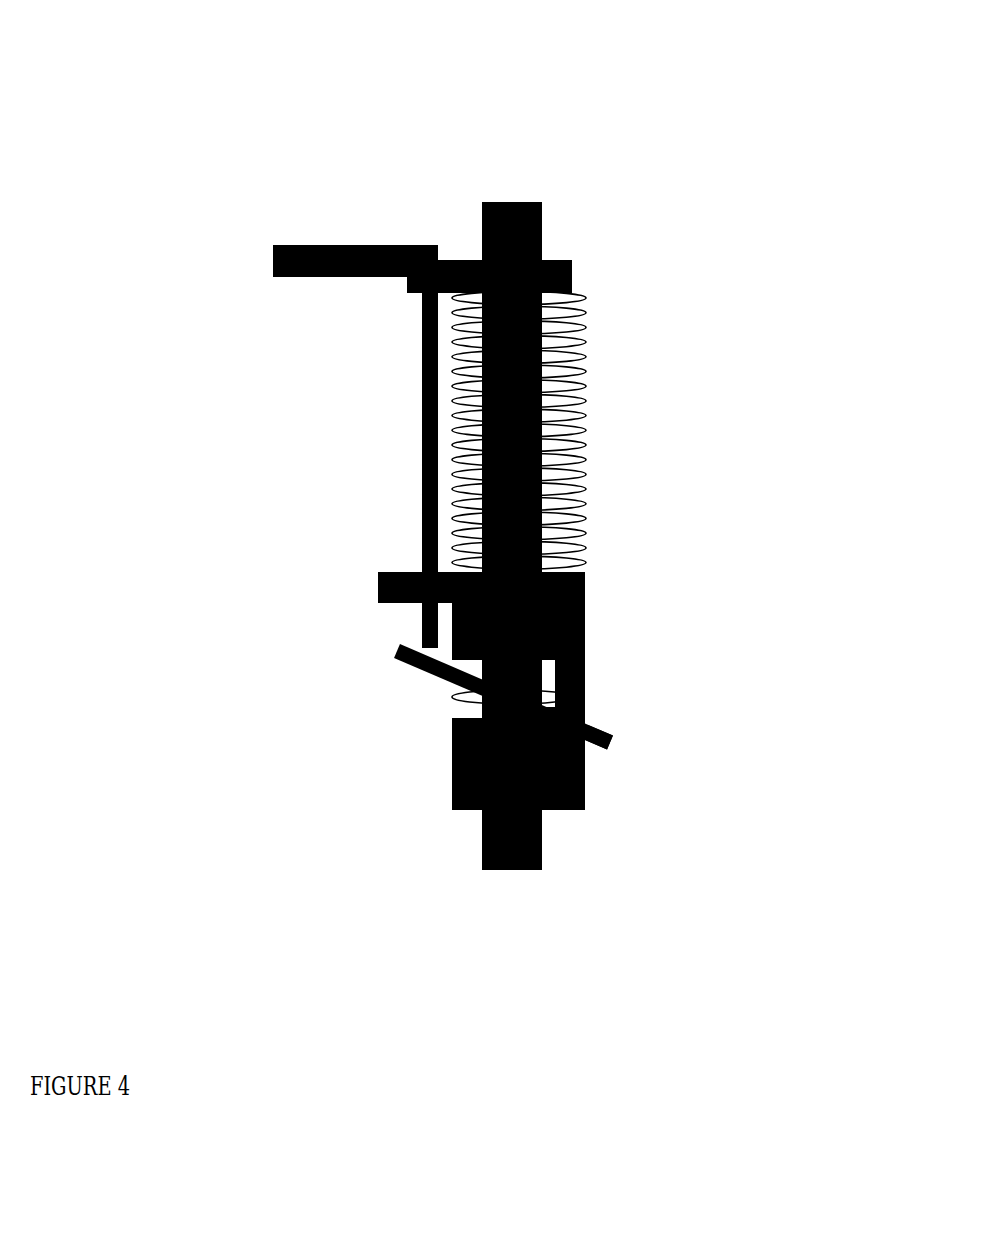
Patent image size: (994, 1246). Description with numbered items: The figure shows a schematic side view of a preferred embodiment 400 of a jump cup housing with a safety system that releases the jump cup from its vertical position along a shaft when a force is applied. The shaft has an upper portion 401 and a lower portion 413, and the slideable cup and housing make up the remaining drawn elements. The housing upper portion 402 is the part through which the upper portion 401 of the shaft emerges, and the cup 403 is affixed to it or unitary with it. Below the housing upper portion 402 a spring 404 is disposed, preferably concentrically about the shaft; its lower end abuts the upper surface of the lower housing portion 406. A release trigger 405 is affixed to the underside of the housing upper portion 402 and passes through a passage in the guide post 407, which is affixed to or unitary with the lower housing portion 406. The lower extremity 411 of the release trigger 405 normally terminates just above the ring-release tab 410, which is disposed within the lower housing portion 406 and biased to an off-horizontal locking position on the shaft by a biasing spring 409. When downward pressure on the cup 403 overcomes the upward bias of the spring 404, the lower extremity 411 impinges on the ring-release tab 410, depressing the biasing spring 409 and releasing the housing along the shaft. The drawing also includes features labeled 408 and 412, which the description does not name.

The preferred embodiment 400 is at (699, 114).
The upper portion of the shaft 401 is at (562, 200).
The housing upper portion 402 is at (604, 278).
The cup 403 is at (241, 269).
The spring 404 is at (604, 356).
The release trigger 405 is at (398, 444).
The lower housing portion 406 is at (604, 591).
The guide post 407 is at (360, 588).
The lever end 408 is at (640, 745).
The biasing spring 409 is at (437, 698).
The ring-release tab 410 is at (379, 663).
The lower extremity of release trigger 411 is at (398, 634).
The lower block 412 is at (604, 788).
The lower portion of the shaft 413 is at (562, 847).